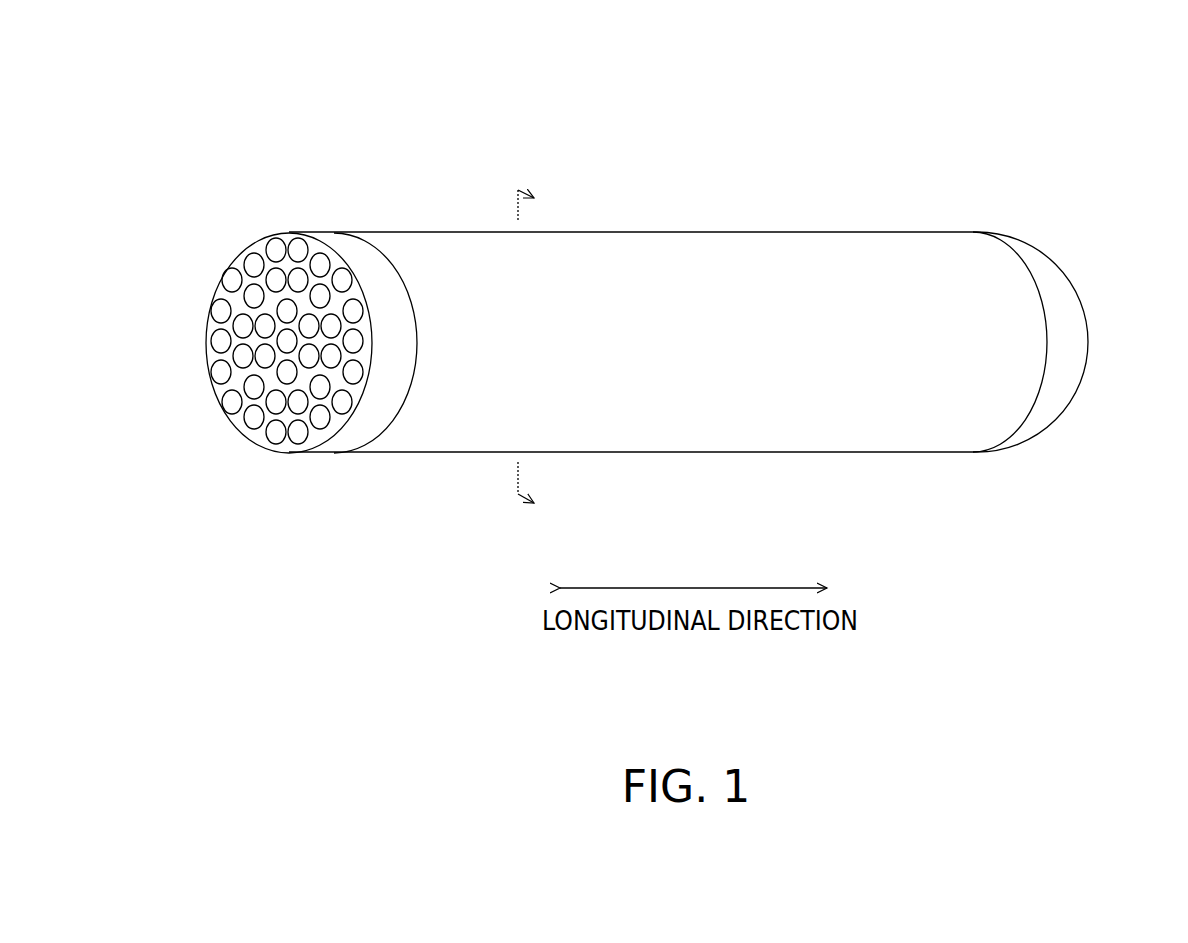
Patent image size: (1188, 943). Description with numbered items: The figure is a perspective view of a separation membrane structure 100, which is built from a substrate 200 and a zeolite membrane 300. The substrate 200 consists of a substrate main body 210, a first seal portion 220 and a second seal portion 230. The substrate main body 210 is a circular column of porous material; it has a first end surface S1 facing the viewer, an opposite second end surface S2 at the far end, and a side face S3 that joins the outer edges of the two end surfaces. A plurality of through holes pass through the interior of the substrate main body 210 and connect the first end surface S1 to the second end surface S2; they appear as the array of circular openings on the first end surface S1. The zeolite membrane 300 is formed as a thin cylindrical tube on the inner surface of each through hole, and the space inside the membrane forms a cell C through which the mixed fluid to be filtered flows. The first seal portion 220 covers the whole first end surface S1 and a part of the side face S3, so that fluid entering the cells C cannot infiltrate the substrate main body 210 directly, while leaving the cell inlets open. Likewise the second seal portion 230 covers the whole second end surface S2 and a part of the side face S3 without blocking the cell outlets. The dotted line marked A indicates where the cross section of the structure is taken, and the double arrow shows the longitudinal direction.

The separation membrane structure 100 is at (610, 283).
The substrate 200 is at (610, 328).
The substrate main body 210 is at (633, 320).
The first seal portion 220 is at (355, 432).
The second seal portion 230 is at (1055, 359).
The zeolite membrane 300 is at (255, 366).
The cell C is at (282, 250).
The first end surface S1 is at (218, 392).
The second end surface S2 is at (1093, 310).
The side face S3 is at (773, 255).
The cross section line A- A is at (538, 356).